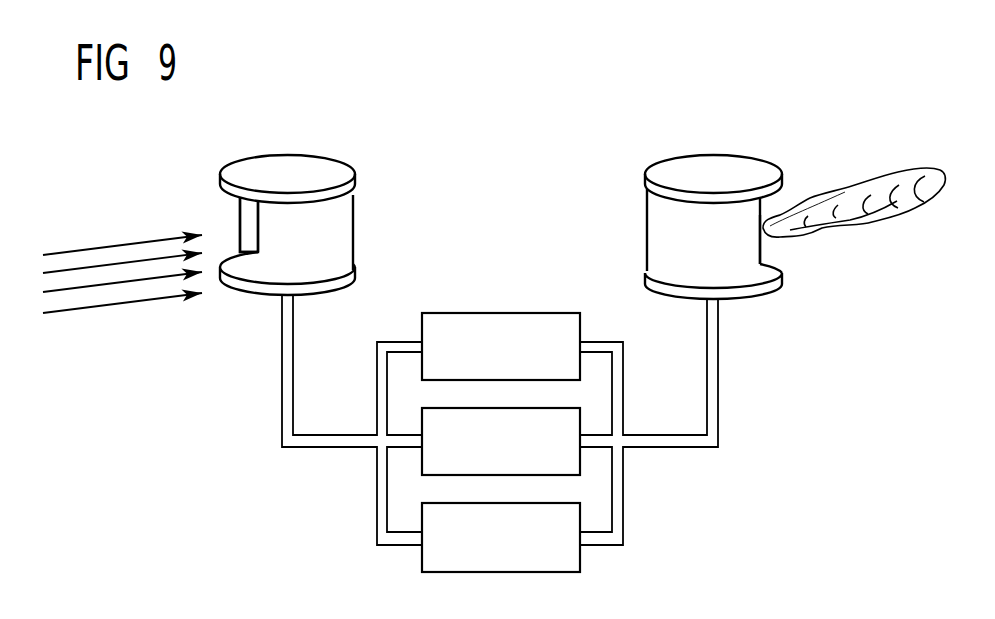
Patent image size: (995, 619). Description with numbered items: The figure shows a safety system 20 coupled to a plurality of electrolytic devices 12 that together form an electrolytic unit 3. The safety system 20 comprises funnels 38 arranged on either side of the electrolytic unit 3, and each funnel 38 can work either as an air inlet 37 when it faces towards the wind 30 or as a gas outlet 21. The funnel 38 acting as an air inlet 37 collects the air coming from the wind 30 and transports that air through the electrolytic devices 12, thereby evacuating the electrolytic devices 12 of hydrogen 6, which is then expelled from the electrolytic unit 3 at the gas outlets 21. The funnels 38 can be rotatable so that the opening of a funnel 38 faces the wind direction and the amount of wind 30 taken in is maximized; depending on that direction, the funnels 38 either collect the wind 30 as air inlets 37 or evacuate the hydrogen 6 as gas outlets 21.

The safety system 20 is at (540, 133).
The electrolytic unit 3 is at (500, 380).
The electrolytic device 12 is at (513, 553).
The wind 30 is at (97, 307).
The air inlet 37 is at (178, 211).
The funnel 38 is at (248, 220).
The gas outlet 21 is at (767, 252).
The hydrogen 6 is at (880, 188).